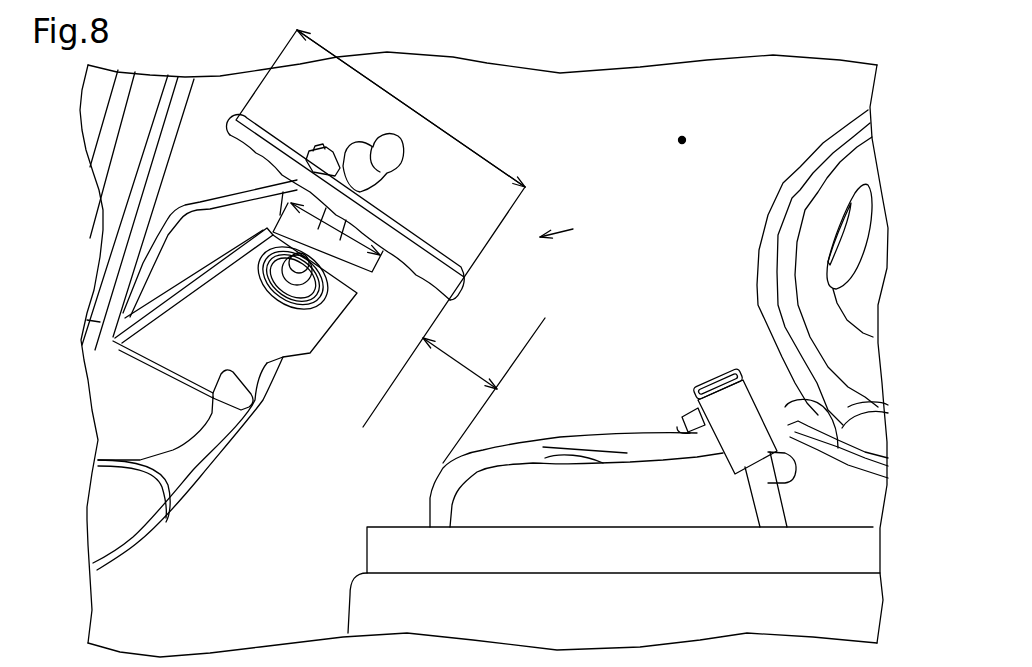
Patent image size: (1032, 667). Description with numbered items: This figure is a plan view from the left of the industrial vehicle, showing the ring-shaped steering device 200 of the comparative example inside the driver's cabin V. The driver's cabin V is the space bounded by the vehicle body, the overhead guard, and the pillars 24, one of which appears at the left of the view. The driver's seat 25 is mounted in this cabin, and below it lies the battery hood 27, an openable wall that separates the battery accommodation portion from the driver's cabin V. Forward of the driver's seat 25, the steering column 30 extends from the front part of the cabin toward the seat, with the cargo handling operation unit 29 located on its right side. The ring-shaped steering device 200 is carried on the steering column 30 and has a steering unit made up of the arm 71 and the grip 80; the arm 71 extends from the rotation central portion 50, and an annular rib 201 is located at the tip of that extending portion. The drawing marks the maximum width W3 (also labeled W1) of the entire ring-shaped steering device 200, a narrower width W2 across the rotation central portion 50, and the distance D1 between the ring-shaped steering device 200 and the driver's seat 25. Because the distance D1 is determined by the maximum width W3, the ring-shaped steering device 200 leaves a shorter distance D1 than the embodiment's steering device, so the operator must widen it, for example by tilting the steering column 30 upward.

The pillar 24 is at (135, 132).
The driver's seat 25 is at (847, 185).
The battery hood 27 is at (687, 577).
The cargo handling operation unit 29 is at (336, 153).
The steering column 30 is at (277, 325).
The rotation central portion 50 is at (353, 283).
The arm 71 is at (255, 130).
The grip 80 is at (402, 180).
The ring-shaped steering device 200 is at (583, 228).
The annular rib 201 is at (263, 155).
The driver's cabin V is at (682, 138).
The width of the steering device W1 is at (420, 108).
The width W2 is at (347, 297).
The maximum width of the entire steering device W3 is at (417, 100).
The distance between the steering device and the driver's seat D1 is at (463, 357).